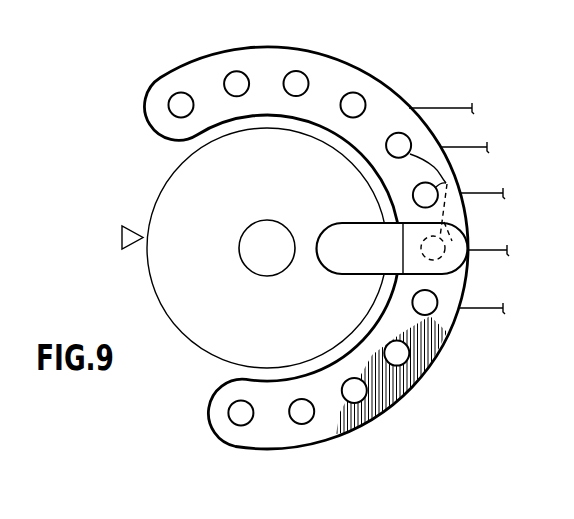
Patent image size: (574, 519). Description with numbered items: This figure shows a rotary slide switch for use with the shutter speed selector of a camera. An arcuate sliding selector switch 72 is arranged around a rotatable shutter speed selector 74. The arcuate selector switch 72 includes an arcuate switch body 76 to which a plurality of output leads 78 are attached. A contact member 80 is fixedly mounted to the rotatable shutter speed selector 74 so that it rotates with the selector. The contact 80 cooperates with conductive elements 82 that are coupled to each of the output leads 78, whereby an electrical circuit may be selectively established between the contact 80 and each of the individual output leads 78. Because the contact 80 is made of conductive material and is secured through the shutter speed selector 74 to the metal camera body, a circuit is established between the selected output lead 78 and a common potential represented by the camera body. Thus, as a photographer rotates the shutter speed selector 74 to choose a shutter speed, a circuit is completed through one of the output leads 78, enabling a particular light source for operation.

The arcuate sliding selector switch 72 is at (394, 66).
The rotatable shutter speed selector 74 is at (172, 176).
The arcuate switch body 76 is at (190, 70).
The output leads 78 is at (488, 192).
The contact member 80 is at (454, 240).
The conductive elements 82 is at (447, 184).